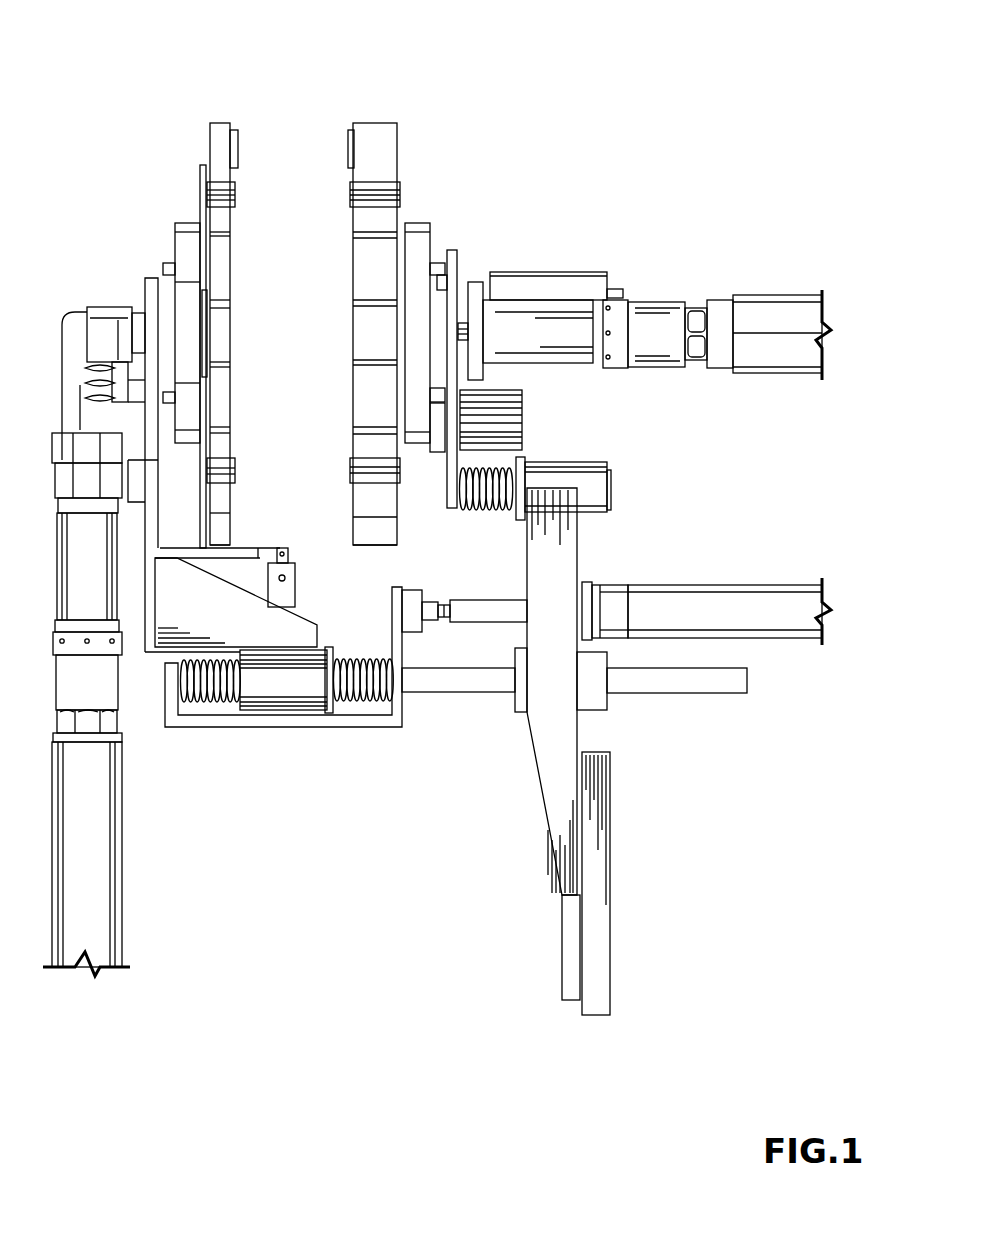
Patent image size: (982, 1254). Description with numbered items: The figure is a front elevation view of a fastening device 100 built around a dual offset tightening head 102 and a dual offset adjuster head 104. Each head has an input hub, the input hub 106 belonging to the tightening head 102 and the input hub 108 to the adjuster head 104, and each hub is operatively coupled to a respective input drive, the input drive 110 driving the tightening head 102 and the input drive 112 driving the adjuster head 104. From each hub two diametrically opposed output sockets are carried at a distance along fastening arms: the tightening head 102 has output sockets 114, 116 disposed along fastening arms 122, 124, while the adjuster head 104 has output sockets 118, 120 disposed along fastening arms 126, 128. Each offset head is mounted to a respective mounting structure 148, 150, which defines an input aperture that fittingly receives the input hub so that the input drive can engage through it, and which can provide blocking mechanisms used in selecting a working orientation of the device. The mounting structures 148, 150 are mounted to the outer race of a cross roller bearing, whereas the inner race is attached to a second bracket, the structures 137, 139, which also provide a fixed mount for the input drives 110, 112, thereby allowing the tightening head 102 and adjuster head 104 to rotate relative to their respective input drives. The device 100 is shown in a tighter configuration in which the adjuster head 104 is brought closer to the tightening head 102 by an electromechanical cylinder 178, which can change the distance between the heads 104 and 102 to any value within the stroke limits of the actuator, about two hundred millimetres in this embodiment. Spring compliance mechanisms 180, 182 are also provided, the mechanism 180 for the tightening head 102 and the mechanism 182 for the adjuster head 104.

The fastening device 100 is at (522, 80).
The dual offset tightening head 102 is at (378, 250).
The dual offset adjuster head 104 is at (217, 270).
The input hub 106 is at (350, 337).
The input hub 108 is at (237, 333).
The input drive 110 is at (528, 325).
The input drive 112 is at (103, 327).
The output socket 114 is at (347, 152).
The output socket 116 is at (355, 533).
The output socket 118 is at (237, 140).
The output socket 120 is at (222, 528).
The fastening arm 122 is at (400, 187).
The fastening arm 124 is at (402, 472).
The fastening arm 126 is at (205, 195).
The fastening arm 128 is at (235, 457).
The second bracket 137 is at (450, 303).
The second bracket 139 is at (146, 290).
The mounting structure 148 is at (433, 243).
The mounting structure 150 is at (182, 230).
The electromechanical cylinder 178 is at (490, 618).
The spring compliance mechanism 180 is at (500, 492).
The spring compliance mechanism 182 is at (205, 692).